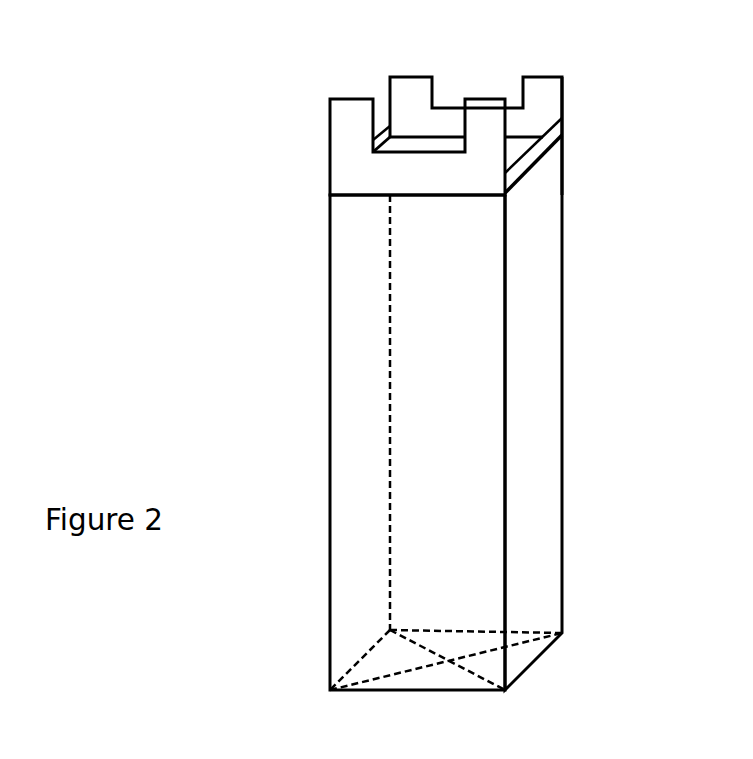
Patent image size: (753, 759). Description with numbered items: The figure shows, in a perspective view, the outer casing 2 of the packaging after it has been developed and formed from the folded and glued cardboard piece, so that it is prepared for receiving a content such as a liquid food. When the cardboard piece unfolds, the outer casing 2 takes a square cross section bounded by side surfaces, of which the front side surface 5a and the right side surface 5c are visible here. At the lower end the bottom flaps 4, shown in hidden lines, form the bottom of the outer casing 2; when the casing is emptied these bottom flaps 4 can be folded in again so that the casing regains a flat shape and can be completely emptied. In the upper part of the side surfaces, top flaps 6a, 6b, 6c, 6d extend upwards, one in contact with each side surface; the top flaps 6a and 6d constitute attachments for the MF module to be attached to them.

The outer casing 2 is at (626, 374).
The bottom flaps 4 is at (473, 648).
The side surface 5a is at (450, 416).
The side surface 5c is at (543, 356).
The top flap 6a is at (427, 186).
The top flap 6b is at (384, 128).
The top flap 6c is at (537, 147).
The top flap 6d is at (435, 92).